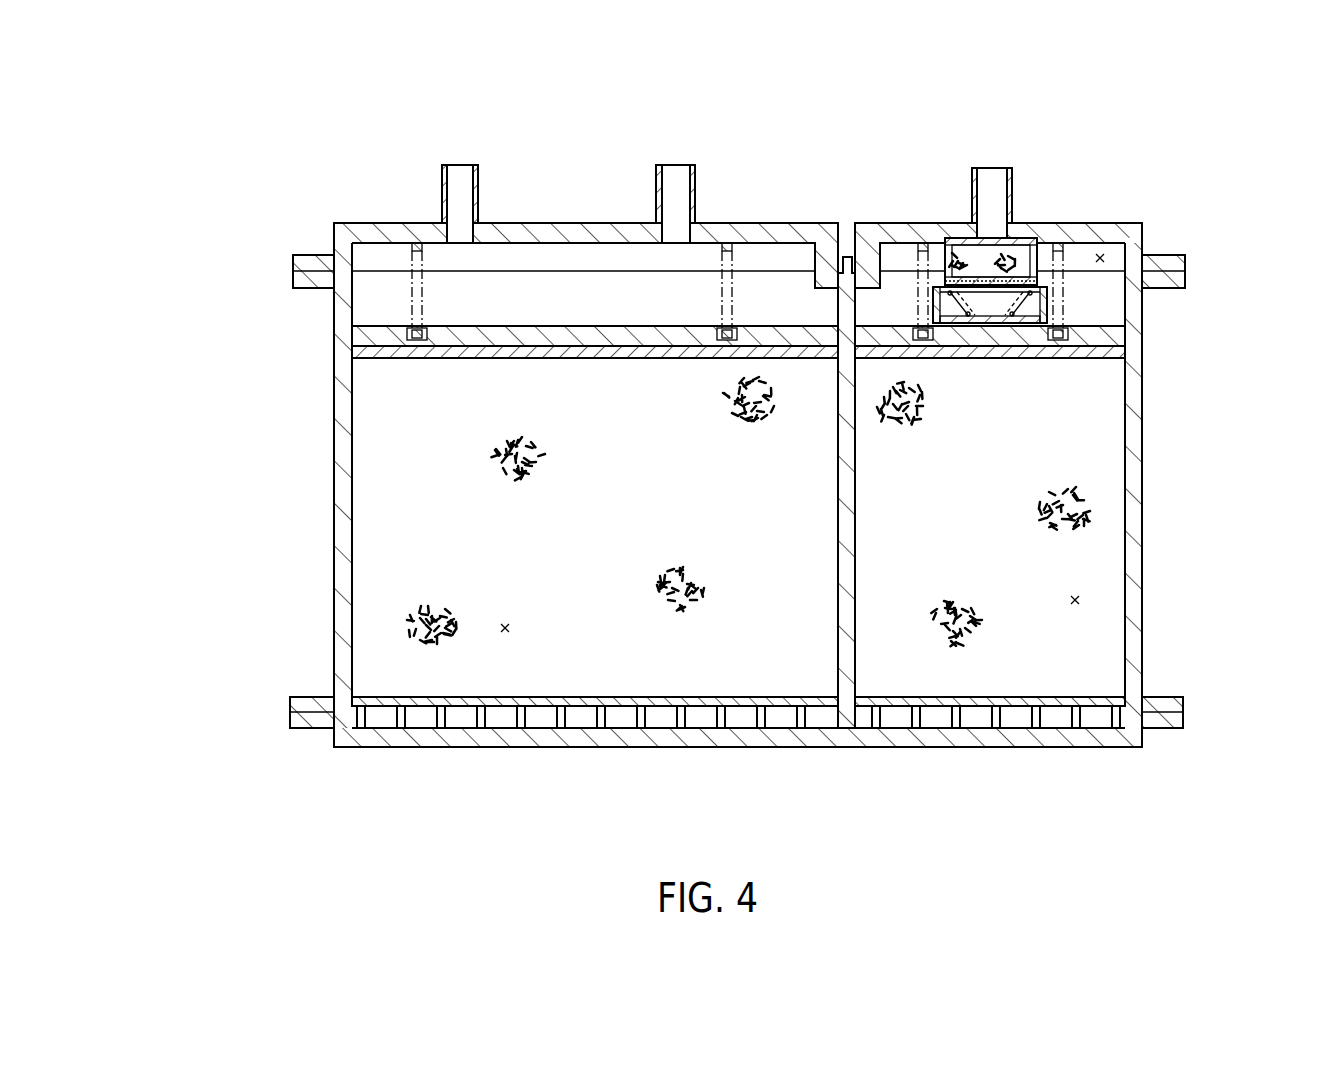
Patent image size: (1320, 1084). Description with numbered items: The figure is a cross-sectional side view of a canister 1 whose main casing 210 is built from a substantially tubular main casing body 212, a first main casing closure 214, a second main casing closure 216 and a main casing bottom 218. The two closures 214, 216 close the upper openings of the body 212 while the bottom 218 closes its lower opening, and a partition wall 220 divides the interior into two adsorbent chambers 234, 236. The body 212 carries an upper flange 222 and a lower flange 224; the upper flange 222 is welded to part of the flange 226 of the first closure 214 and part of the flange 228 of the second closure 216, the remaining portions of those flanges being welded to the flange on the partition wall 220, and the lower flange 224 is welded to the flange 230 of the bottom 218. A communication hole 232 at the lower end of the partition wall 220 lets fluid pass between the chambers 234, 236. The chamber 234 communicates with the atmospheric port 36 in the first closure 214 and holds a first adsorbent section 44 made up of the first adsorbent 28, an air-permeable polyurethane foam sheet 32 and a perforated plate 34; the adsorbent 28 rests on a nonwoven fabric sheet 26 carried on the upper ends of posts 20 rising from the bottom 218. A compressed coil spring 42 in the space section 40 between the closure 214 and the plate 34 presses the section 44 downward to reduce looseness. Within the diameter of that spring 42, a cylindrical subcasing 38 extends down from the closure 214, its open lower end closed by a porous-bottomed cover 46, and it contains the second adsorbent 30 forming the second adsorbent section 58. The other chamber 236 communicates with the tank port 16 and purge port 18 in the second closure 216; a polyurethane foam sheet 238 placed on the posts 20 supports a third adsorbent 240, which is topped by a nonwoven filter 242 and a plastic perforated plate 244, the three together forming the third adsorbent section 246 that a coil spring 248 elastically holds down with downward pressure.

The canister 1 is at (372, 138).
The main casing 210 is at (315, 183).
The main casing body 212 is at (334, 607).
The first main casing closure 214 is at (875, 223).
The second main casing closure 216 is at (562, 223).
The main casing bottom 218 is at (725, 748).
The partition wall 220 is at (848, 570).
The upper flange 222 is at (1183, 284).
The lower flange 224 is at (1185, 706).
The flange of the first main casing closure 226 is at (1170, 257).
The flange of the second main casing closure 228 is at (296, 257).
The flange of the main casing bottom 230 is at (1185, 722).
The communication hole 232 is at (850, 722).
The adsorbent chamber 234 is at (1078, 600).
The adsorbent chamber 236 is at (505, 634).
The polyurethane foam sheet 238 is at (398, 700).
The third adsorbent 240 is at (352, 587).
The filter 242 is at (352, 352).
The perforated plate 244 is at (352, 336).
The third adsorbent section 246 is at (233, 325).
The coil spring 248 is at (415, 243).
The tank port 16 is at (478, 195).
The purge port 18 is at (695, 187).
The posts 20 is at (597, 716).
The nonwoven fabric sheet 26 is at (1095, 700).
The first adsorbent 28 is at (1090, 497).
The second adsorbent 30 is at (1010, 262).
The second adsorbent section 58 is at (991, 261).
The polyurethane foam sheet 32 is at (1107, 352).
The perforated plate 34 is at (1107, 342).
The atmospheric port 36 is at (973, 200).
The subcasing 38 is at (938, 255).
The space section 40 is at (1100, 257).
The coil spring 42 is at (1060, 258).
The first adsorbent section 44 is at (1225, 307).
The cover 46 is at (1000, 324).